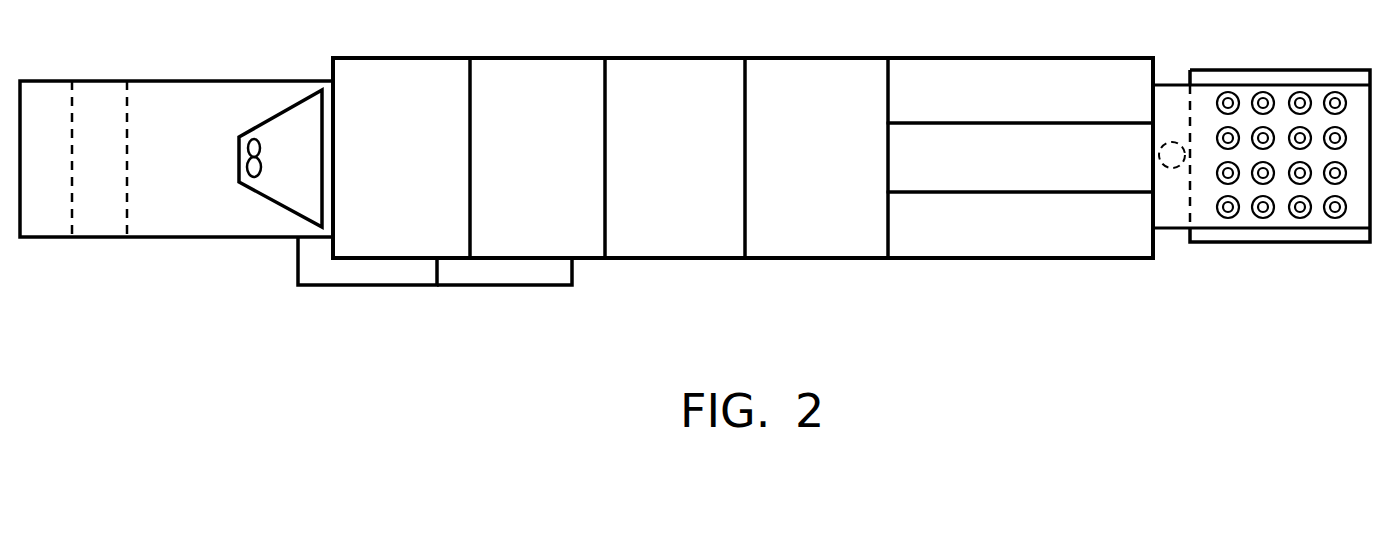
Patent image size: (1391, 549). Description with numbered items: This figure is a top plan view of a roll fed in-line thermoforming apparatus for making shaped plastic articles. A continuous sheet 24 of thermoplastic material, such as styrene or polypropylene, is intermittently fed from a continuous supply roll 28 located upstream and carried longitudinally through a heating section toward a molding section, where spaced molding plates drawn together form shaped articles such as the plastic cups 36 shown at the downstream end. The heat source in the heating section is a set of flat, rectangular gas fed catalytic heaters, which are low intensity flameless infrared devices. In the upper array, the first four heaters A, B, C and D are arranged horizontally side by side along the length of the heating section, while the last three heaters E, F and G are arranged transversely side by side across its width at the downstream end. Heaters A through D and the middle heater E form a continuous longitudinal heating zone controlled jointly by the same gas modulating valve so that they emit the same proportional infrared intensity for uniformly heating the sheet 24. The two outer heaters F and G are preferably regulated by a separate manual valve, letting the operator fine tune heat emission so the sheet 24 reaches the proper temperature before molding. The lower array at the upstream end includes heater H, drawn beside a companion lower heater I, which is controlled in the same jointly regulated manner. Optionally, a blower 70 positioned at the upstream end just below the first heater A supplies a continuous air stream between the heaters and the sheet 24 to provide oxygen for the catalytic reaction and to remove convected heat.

The continuous sheet 24 is at (233, 224).
The continuous supply roll 28 is at (94, 231).
The blower 70 is at (270, 127).
The plastic cups 36 is at (1323, 97).
The catalytic heater A is at (398, 68).
The catalytic heater B is at (512, 68).
The catalytic heater C is at (672, 67).
The catalytic heater D is at (813, 67).
The middle heater E is at (1020, 157).
The outer heater F is at (1013, 65).
The outer heater G is at (1048, 248).
The lower catalytic heater H is at (385, 277).
The section I is at (510, 277).